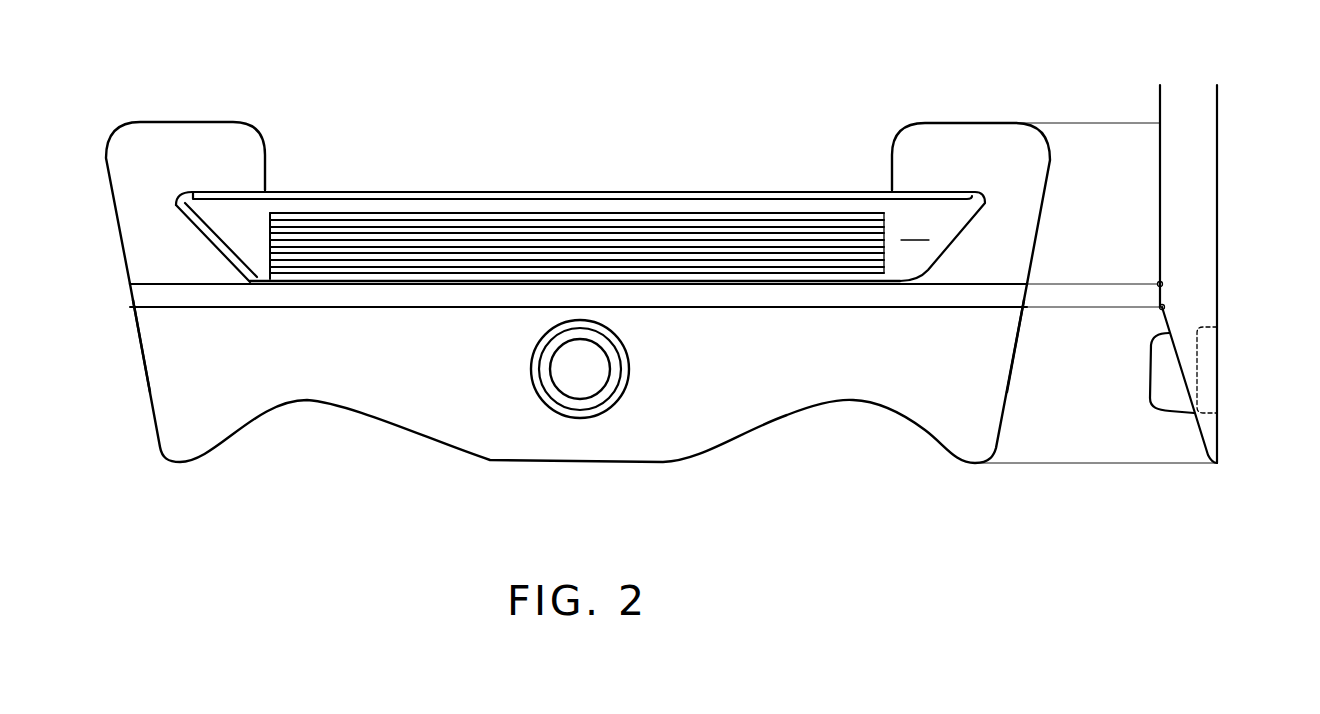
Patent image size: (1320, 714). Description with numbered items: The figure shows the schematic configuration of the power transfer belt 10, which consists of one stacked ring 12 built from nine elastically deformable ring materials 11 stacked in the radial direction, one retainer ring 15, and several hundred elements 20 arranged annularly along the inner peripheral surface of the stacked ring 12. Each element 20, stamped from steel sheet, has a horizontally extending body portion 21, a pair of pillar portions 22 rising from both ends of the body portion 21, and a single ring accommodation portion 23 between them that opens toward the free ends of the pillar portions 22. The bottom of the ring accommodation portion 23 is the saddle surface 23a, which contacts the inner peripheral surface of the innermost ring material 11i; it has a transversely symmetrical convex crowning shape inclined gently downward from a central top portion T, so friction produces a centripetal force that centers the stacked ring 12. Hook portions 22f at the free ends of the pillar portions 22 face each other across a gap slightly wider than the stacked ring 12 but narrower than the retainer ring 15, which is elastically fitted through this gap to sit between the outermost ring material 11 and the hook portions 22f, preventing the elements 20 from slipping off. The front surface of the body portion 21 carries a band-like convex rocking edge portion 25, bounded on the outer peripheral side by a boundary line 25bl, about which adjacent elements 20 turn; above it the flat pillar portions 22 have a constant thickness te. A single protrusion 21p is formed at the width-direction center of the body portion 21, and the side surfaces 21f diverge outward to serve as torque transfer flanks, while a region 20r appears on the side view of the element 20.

The power transfer belt 10 is at (672, 155).
The ring material 11 is at (575, 321).
The innermost ring material 11i is at (267, 277).
The stacked ring 12 is at (267, 242).
The retainer ring 15 is at (516, 234).
The element 20 is at (152, 422).
The recess of holder body 20r is at (1205, 357).
The body portion 21 is at (758, 375).
The side surfaces 21f is at (147, 373).
The protrusion 21p is at (573, 376).
The pillar portions 22 is at (137, 200).
The hook portions 22f is at (247, 148).
The ring accommodation portion 23 is at (914, 228).
The saddle surface 23a is at (247, 280).
The rocking edge portion 25 is at (173, 298).
The boundary line 25bl is at (203, 283).
The top portion T is at (578, 273).
The thickness te is at (1160, 100).